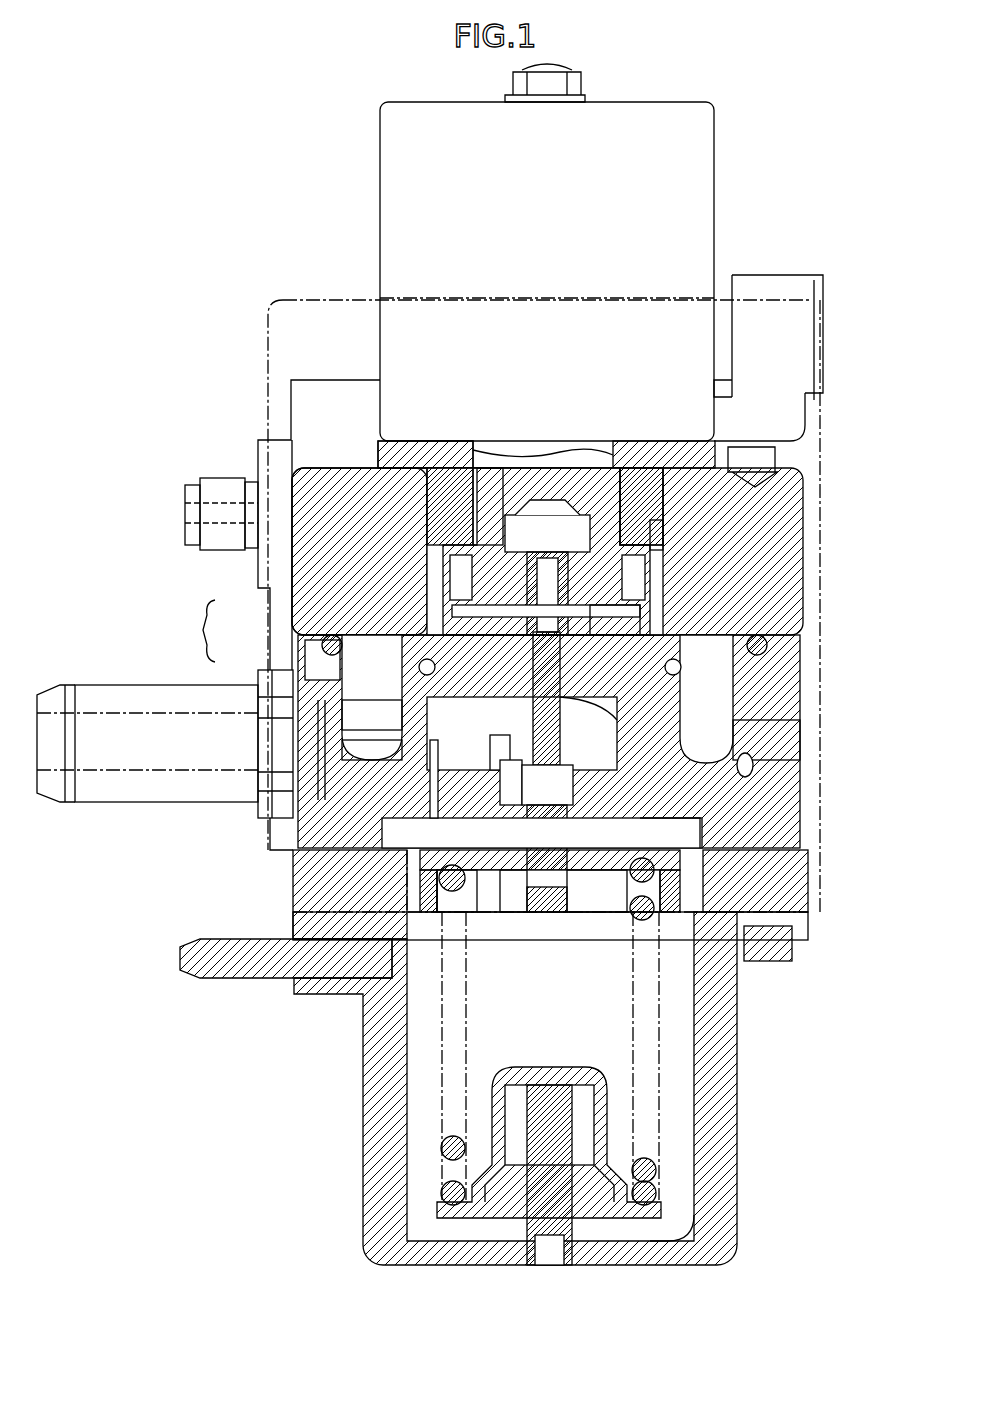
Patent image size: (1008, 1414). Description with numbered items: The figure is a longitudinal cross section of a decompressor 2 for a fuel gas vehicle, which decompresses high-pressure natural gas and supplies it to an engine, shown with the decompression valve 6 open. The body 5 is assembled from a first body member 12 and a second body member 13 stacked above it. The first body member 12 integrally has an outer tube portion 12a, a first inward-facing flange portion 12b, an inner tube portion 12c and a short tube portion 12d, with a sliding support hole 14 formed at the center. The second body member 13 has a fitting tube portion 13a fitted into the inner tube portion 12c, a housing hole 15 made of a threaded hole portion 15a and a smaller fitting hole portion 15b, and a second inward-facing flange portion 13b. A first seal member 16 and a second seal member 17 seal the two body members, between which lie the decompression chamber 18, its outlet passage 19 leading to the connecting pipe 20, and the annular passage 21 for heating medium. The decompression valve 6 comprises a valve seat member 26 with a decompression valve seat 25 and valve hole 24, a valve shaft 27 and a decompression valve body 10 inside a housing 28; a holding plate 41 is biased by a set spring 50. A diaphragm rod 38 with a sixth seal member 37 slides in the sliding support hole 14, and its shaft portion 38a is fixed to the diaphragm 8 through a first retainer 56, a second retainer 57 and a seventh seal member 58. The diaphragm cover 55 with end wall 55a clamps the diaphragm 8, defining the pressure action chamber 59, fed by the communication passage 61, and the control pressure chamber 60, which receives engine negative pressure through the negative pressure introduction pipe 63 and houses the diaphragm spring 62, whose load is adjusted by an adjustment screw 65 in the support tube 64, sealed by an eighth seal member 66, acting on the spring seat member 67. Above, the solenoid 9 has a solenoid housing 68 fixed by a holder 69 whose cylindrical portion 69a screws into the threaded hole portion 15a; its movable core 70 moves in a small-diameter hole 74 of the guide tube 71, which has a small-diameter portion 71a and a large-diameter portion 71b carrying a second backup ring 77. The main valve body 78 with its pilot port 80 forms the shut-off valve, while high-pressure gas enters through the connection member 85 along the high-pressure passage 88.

The brake fluid pressure control device 2 is at (262, 314).
The body 5 is at (202, 631).
The decompression valve 6 is at (565, 722).
The diaphragm 8 is at (400, 915).
The solenoid 9 is at (380, 225).
The decompression valve body 10 is at (641, 506).
The first body member 12 is at (290, 658).
The outer tube portion 12a is at (740, 722).
The first inward-facing flange portion 12b is at (480, 905).
The inner tube portion 12c is at (740, 745).
The short tube portion 12d is at (420, 747).
The second body member 13 is at (300, 612).
The fitting tube portion 13a is at (430, 660).
The second inward-facing flange portion 13b is at (400, 722).
The sliding support hole 14 is at (575, 800).
The housing hole 15 is at (640, 592).
The threaded hole portion 15a is at (618, 470).
The fitting hole portion 15b is at (455, 620).
The first seal member 16 is at (762, 636).
The second seal member 17 is at (682, 668).
The decompression chamber 18 is at (430, 755).
The outlet passage 19 is at (330, 775).
The connecting pipe 20 is at (135, 780).
The annular passage 21 is at (752, 770).
The valve hole 24 is at (580, 703).
The decompression valve seat 25 is at (490, 718).
The valve seat member 26 is at (625, 635).
The valve shaft 27 is at (505, 800).
The housing 28 is at (568, 500).
The sixth seal member 37 is at (470, 792).
The diaphragm rod 38 is at (575, 775).
The shaft portion 38a is at (555, 905).
The holding plate 41 is at (500, 772).
The set spring 50 is at (630, 875).
The diaphragm cover 55 is at (365, 1172).
The end wall 55a is at (690, 1235).
The first retainer 56 is at (640, 905).
The second retainer 57 is at (755, 940).
The seventh seal member 58 is at (540, 905).
The pressure action chamber 59 is at (685, 832).
The control pressure chamber 60 is at (484, 1057).
The communication passage 61 is at (398, 860).
The diaphragm spring 62 is at (440, 1148).
The negative pressure introduction pipe 63 is at (240, 978).
The support tube 64 is at (607, 1120).
The adjustment screw 65 is at (552, 1067).
The eighth seal member 66 is at (600, 1160).
The spring seat member 67 is at (500, 1120).
The solenoid housing 68 is at (380, 298).
The holder 69 is at (385, 462).
The cylindrical portion 69a is at (440, 500).
The movable core 70 is at (440, 520).
The guide tube 71 is at (665, 495).
The small-diameter portion 71a is at (500, 468).
The large-diameter portion 71b is at (663, 525).
The small-diameter hole 74 is at (450, 506).
The second backup ring 77 is at (640, 600).
The main valve body 78 is at (455, 590).
The pilot port 80 is at (540, 500).
The connection member 85 is at (222, 486).
The high-pressure passage 88 is at (300, 520).